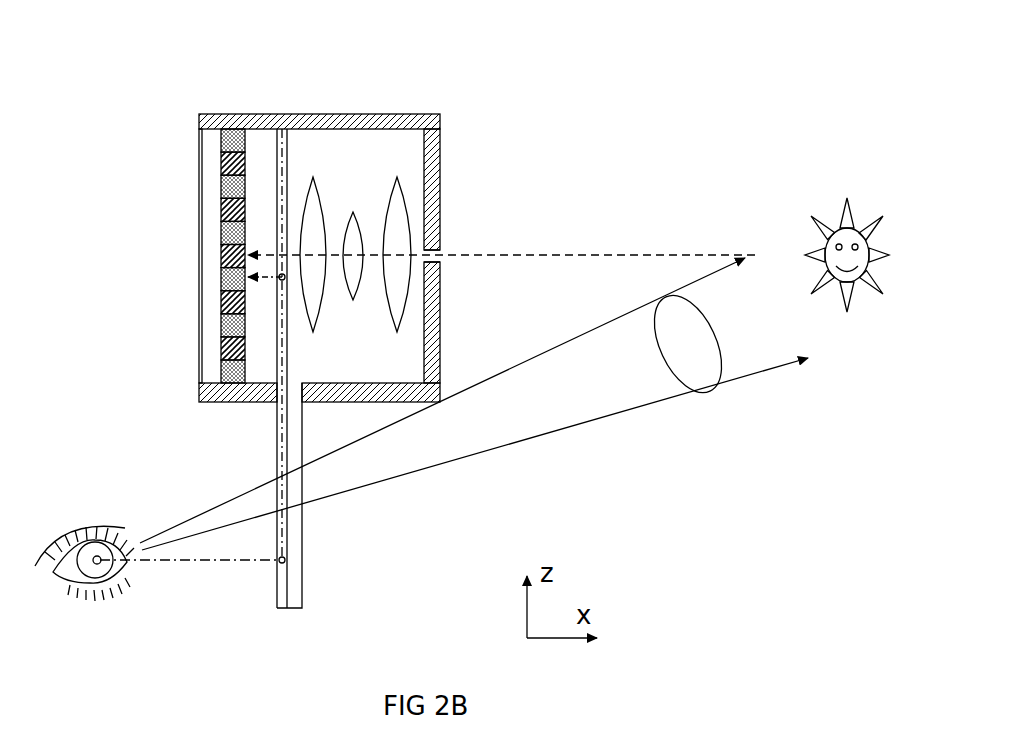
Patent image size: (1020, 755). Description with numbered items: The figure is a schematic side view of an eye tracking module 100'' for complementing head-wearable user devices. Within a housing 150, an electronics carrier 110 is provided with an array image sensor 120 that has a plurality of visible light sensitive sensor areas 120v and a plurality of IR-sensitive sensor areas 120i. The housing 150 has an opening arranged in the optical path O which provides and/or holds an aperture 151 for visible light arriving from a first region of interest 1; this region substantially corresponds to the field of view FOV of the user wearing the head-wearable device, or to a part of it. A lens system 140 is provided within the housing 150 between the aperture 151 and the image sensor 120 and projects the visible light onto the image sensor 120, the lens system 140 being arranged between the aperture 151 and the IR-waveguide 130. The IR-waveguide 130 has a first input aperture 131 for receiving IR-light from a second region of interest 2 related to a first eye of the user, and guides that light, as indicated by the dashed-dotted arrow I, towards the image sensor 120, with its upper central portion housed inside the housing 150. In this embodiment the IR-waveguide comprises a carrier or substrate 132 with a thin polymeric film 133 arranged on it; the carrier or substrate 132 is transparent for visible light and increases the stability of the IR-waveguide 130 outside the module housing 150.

The eye tracking module 100'' is at (311, 210).
The electronics carrier 110 is at (211, 183).
The array image sensor 120 is at (176, 299).
The visible light sensitive sensor areas 120v is at (225, 251).
The IR-sensitive sensor areas 120i is at (222, 326).
The IR-waveguide 130 is at (310, 520).
The first input aperture 131 is at (277, 580).
The carrier or substrate 132 is at (295, 530).
The thin polymeric film 133 is at (283, 128).
The lens system 140 is at (355, 157).
The housing 150 is at (441, 118).
The aperture 151 is at (452, 268).
The first region of interest 1 is at (851, 185).
The second region of interest 2 is at (110, 518).
The optical path O is at (477, 238).
The IR-light path I is at (223, 578).
The field of view FOV is at (700, 403).